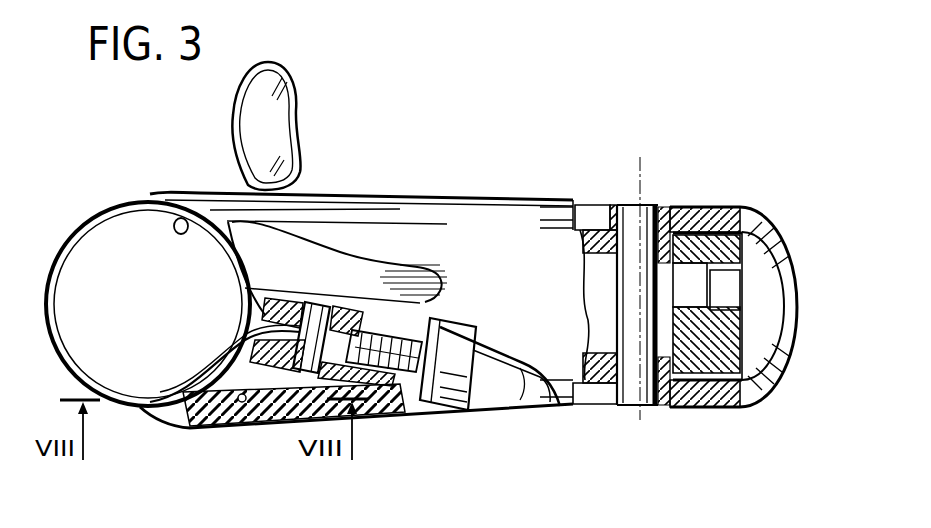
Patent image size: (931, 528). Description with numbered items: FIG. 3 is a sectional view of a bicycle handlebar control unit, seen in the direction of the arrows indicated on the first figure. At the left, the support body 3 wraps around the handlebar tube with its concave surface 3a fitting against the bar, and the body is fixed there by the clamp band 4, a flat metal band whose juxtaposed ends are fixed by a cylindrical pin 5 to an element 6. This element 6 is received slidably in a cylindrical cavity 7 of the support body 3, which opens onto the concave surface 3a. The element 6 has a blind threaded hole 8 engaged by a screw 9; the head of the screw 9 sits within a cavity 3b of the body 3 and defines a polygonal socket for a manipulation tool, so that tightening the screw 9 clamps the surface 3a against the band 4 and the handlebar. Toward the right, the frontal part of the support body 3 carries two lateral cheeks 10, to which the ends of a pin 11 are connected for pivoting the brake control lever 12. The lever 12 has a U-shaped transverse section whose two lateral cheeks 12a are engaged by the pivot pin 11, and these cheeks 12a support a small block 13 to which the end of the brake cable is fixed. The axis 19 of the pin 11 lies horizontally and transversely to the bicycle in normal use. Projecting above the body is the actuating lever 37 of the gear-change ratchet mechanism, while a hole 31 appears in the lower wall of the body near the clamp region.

The support body 3 is at (453, 198).
The concave surface 3a is at (182, 219).
The cavity 3b is at (520, 402).
The clamp band 4 is at (92, 214).
The cylindrical pin 5 is at (328, 300).
The element 6 is at (394, 400).
The cylindrical cavity 7 is at (418, 322).
The blind threaded hole 8 is at (384, 322).
The screw 9 is at (460, 405).
The lateral cheeks 10 is at (700, 215).
The pin 11 is at (630, 207).
The brake control lever 12 is at (775, 234).
The lateral cheeks 12a is at (598, 228).
The small block 13 is at (730, 337).
The axis 19 is at (655, 190).
The hole 31 is at (243, 420).
The actuating lever 37 is at (274, 106).